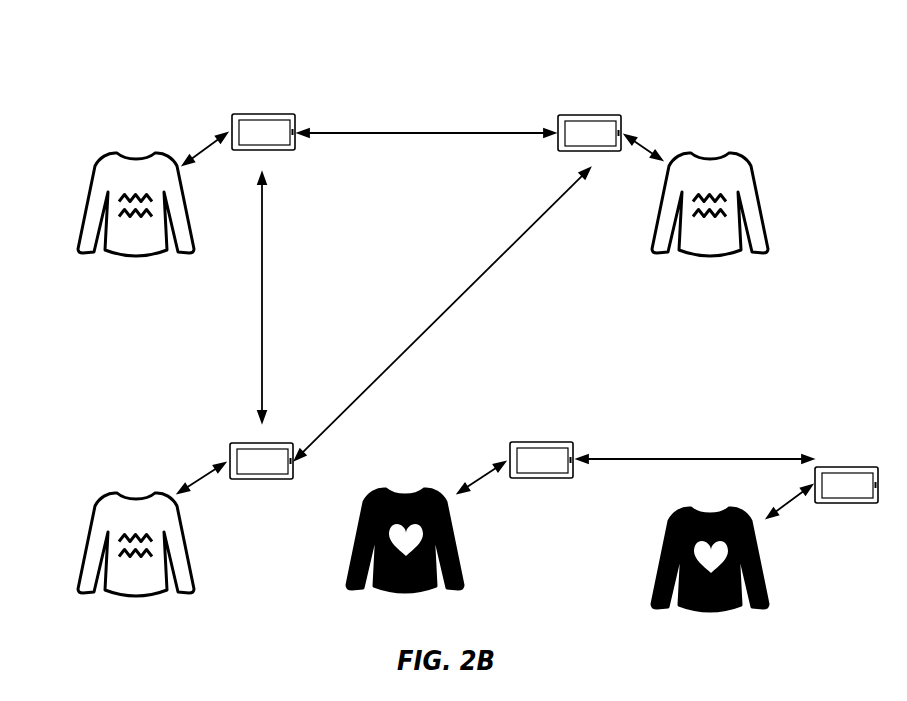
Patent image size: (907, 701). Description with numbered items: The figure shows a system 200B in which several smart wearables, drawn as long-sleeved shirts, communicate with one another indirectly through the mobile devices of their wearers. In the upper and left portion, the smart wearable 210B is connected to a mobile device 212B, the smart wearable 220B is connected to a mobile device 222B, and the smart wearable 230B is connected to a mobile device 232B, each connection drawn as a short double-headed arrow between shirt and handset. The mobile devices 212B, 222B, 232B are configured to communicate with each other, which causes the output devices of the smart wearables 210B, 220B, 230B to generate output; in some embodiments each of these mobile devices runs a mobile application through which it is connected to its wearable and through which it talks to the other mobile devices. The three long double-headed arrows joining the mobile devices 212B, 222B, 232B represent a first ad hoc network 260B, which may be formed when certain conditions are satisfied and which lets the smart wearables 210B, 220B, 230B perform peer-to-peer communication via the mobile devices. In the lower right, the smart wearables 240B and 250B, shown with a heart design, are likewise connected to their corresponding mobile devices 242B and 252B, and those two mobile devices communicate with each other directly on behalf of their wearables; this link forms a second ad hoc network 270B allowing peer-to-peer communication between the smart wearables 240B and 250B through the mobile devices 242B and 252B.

The system 200B is at (473, 42).
The smart wearable 210B is at (136, 204).
The mobile device 212B is at (263, 132).
The smart wearable 220B is at (136, 544).
The mobile device 222B is at (261, 461).
The smart wearable 230B is at (710, 204).
The mobile device 232B is at (589, 133).
The smart wearable 240B is at (405, 540).
The mobile device 242B is at (541, 460).
The smart wearable 250B is at (710, 559).
The mobile device 252B is at (846, 485).
The first ad hoc network 260B is at (408, 132).
The second ad hoc network 270B is at (680, 459).